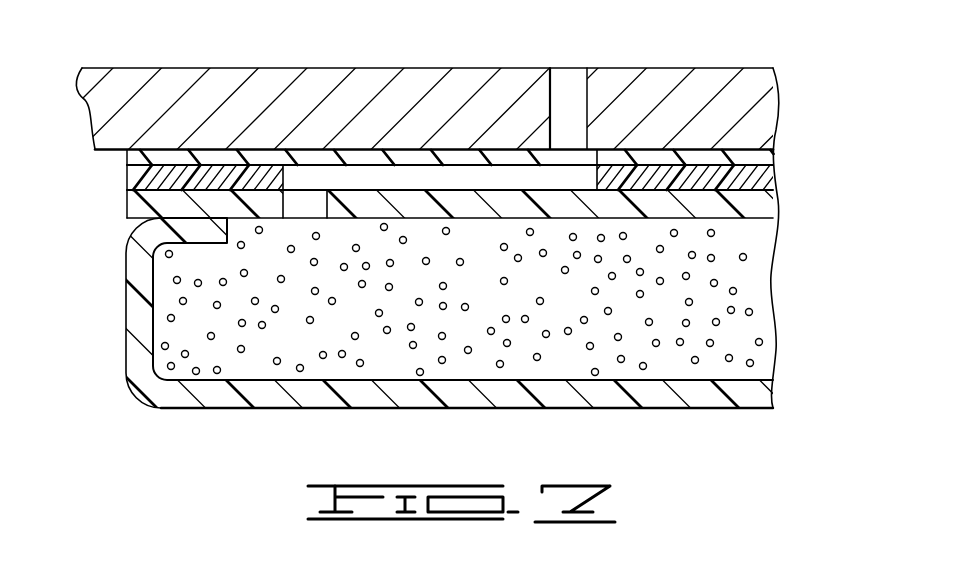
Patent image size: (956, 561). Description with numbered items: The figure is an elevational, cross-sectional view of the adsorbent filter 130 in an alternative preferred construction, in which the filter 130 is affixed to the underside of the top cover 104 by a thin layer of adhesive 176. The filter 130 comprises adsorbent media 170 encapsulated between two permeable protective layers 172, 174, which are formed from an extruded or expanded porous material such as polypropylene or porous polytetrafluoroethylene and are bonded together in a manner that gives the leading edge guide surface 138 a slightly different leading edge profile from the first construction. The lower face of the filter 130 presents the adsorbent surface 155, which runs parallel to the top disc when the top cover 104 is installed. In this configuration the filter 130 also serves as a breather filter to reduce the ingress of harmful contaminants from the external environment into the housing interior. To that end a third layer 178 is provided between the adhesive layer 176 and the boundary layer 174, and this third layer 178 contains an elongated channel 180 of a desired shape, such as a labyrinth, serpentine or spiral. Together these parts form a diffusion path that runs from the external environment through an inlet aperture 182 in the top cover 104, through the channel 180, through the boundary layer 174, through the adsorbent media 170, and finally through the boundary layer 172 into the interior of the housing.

The top cover 104 is at (230, 77).
The elongated channel 180 is at (402, 168).
The inlet aperture 182 is at (570, 76).
The thin layer of adhesive 176 is at (748, 157).
The third layer 178 is at (765, 178).
The protective layer 174 is at (755, 213).
The leading edge guide surface 138 is at (125, 295).
The adsorbent media 170 is at (360, 362).
The adsorbent surface 155 is at (407, 408).
The protective layer 172 is at (590, 400).
The adsorbent filter 130 is at (131, 418).